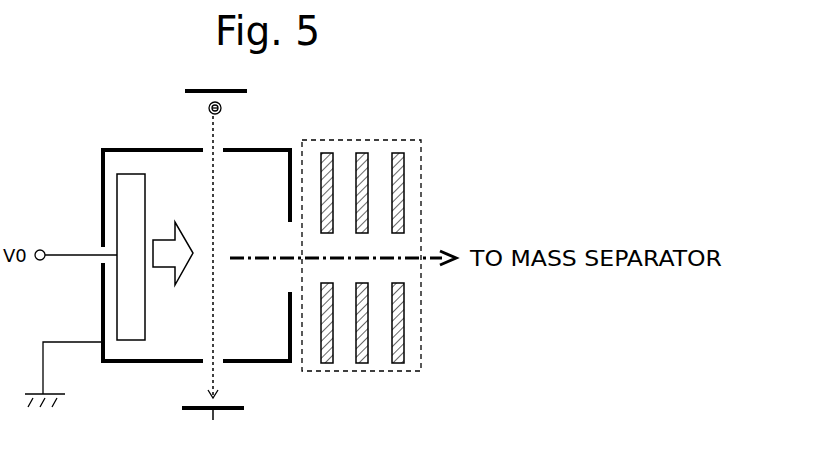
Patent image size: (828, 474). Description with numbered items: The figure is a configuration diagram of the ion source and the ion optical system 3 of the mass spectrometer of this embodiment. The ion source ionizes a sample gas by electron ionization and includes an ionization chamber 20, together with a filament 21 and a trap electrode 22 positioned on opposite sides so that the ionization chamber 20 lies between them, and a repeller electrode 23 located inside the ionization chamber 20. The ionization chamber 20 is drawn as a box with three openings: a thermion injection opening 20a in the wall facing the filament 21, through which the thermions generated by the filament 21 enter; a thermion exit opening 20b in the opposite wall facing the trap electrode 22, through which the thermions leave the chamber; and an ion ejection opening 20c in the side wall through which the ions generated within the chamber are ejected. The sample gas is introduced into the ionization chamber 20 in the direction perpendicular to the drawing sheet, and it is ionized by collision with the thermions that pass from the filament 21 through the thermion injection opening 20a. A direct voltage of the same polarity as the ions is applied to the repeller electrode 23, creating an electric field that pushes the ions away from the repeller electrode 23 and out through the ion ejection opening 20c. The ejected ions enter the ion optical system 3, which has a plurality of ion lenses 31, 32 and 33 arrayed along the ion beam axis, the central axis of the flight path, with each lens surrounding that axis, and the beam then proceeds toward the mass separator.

The ion optical system 3 is at (379, 265).
The ionization chamber 20 is at (101, 148).
The thermion injection opening 20a is at (204, 147).
The thermion exit opening 20b is at (206, 364).
The ion ejection opening 20c is at (290, 244).
The filament 21 is at (187, 89).
The trap electrode 22 is at (185, 411).
The repeller electrode 23 is at (118, 204).
The ion lens 31 is at (326, 365).
The ion lens 32 is at (362, 365).
The ion lens 33 is at (398, 365).